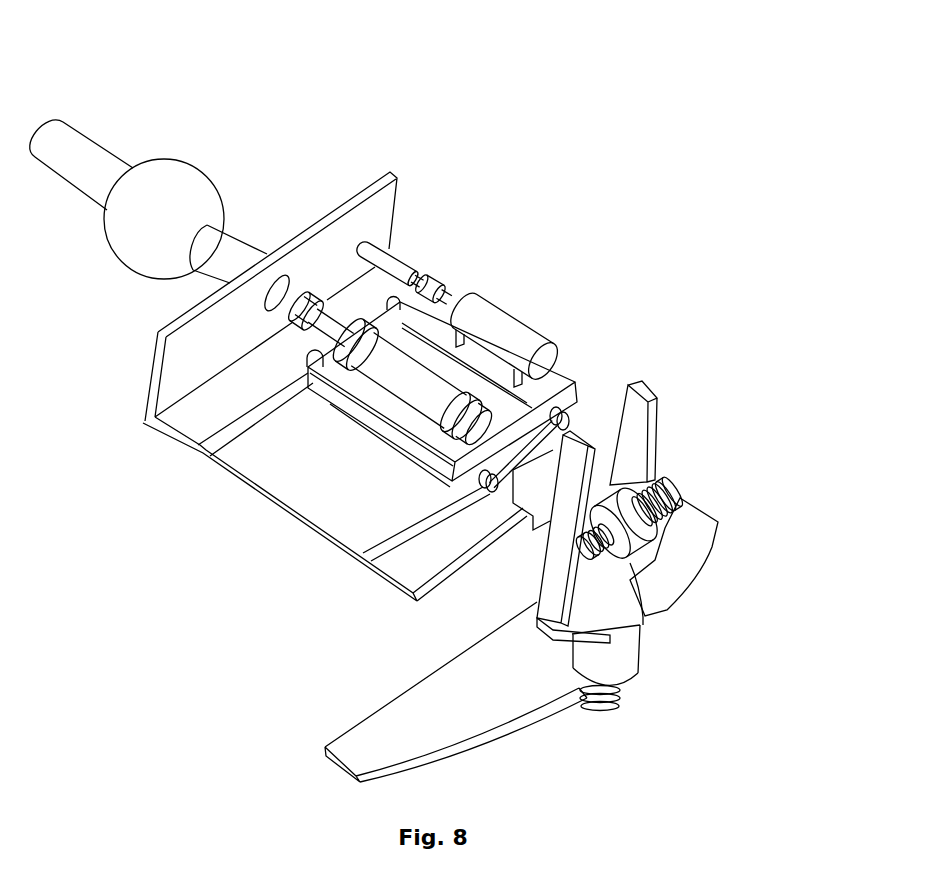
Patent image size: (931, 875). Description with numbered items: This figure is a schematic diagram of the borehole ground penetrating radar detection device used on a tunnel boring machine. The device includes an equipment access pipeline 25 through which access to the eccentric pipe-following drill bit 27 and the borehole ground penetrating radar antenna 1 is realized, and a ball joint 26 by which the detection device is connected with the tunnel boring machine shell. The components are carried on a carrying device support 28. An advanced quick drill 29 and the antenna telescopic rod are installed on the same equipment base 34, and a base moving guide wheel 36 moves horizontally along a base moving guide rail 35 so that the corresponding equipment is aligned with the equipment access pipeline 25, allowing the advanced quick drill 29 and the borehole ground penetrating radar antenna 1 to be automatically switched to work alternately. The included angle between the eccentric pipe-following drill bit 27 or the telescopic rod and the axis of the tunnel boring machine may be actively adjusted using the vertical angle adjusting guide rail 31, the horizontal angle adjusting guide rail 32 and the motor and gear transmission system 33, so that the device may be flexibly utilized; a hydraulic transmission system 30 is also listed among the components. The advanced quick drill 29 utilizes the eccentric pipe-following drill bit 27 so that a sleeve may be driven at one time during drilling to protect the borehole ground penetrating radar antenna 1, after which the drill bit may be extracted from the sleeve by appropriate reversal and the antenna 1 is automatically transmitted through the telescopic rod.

The borehole ground penetrating radar antenna 1 is at (366, 238).
The equipment access pipeline 25 is at (93, 134).
The ball joint 26 is at (205, 171).
The eccentric pipe-following drill bit 27 is at (304, 288).
The carrying device support 28 is at (392, 212).
The advanced quick drill 29 is at (382, 360).
The hydraulic transmission system 30 is at (500, 330).
The vertical angle adjusting guide rail 31 is at (565, 458).
The horizontal angle adjusting guide rail 32 is at (692, 532).
The motor and gear transmission system 33 is at (642, 518).
The equipment base 34 is at (408, 460).
The base moving guide rail 35 is at (390, 525).
The base moving guide wheel 36 is at (485, 487).